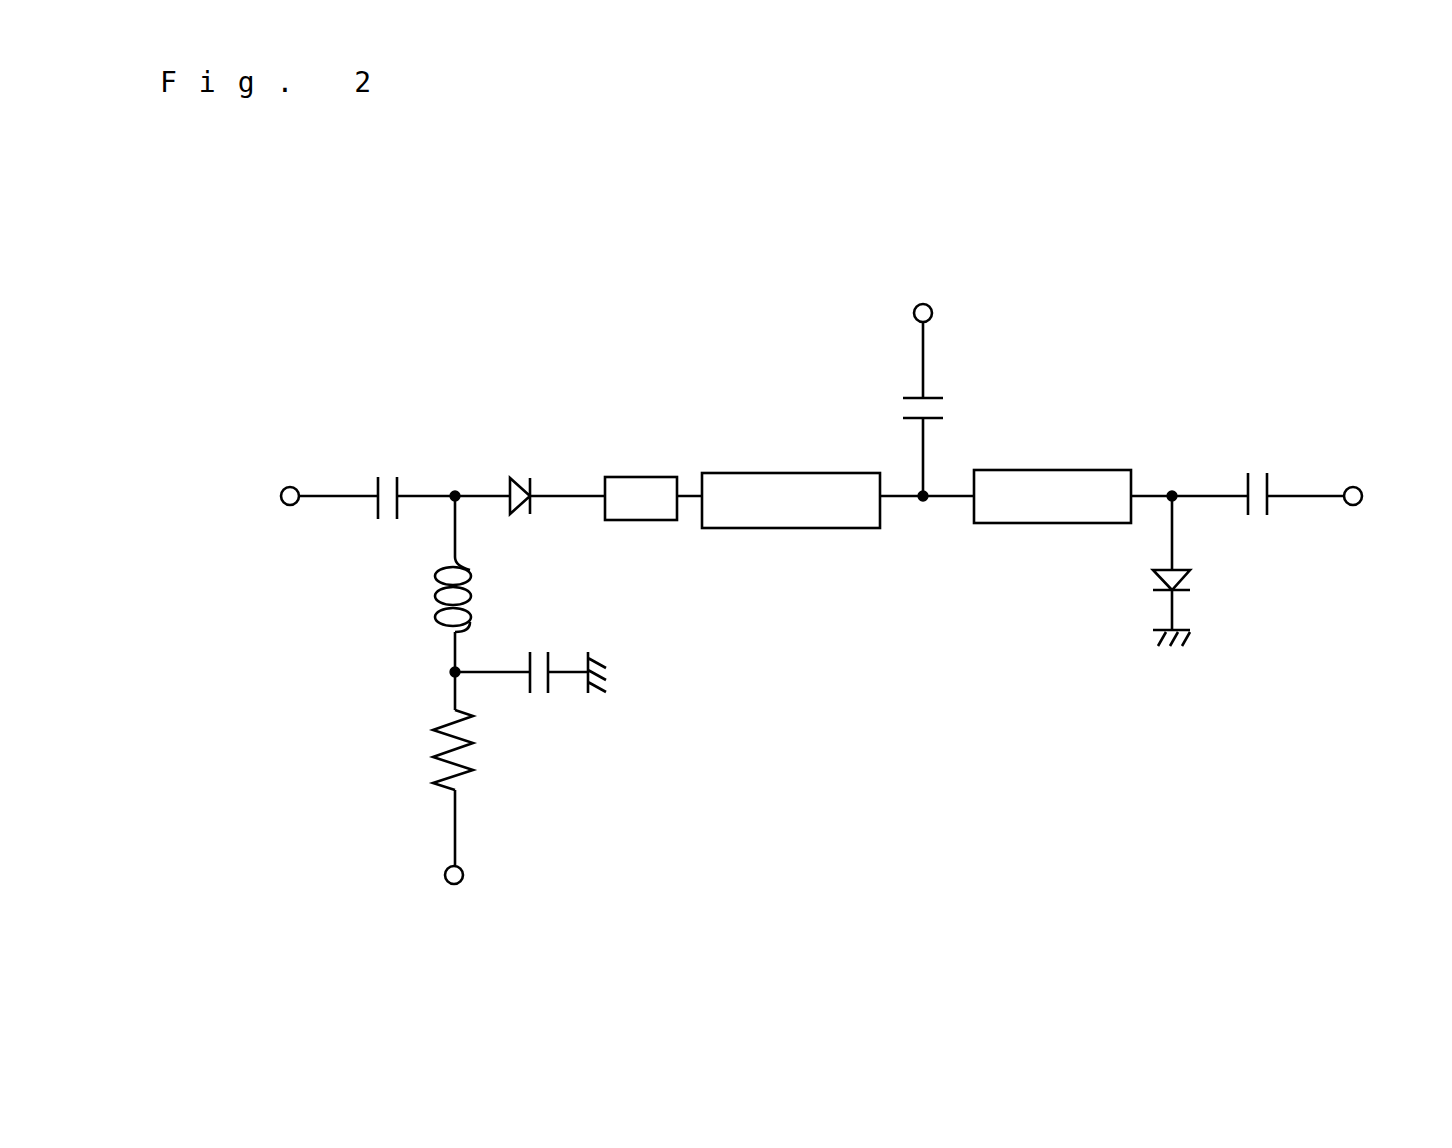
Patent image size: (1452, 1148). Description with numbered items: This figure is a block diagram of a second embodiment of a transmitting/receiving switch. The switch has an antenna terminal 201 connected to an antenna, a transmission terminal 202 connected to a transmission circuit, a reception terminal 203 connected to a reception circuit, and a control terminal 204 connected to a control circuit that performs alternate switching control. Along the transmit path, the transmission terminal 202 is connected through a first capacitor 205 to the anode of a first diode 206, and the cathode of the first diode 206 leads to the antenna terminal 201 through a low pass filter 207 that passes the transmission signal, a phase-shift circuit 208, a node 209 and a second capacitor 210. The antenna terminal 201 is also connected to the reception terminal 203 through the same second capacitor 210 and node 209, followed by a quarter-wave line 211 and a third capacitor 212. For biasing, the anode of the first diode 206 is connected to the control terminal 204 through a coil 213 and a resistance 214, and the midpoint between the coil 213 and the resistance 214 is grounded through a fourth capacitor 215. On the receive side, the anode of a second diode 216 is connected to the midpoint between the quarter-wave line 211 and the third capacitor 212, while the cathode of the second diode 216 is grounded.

The antenna terminal 201 is at (944, 313).
The transmission terminal 202 is at (289, 476).
The reception terminal 203 is at (1355, 514).
The control terminal 204 is at (435, 864).
The first capacitor 205 is at (394, 468).
The first diode 206 is at (519, 465).
The low pass filter 207 is at (646, 466).
The phase-shift circuit 208 is at (799, 466).
The node 209 is at (922, 517).
The second capacitor 210 is at (896, 396).
The quarter-wave line 211 is at (1066, 534).
The third capacitor 212 is at (1257, 532).
The coil 213 is at (415, 595).
The resistance 214 is at (504, 759).
The fourth capacitor 215 is at (560, 652).
The second diode 216 is at (1143, 602).